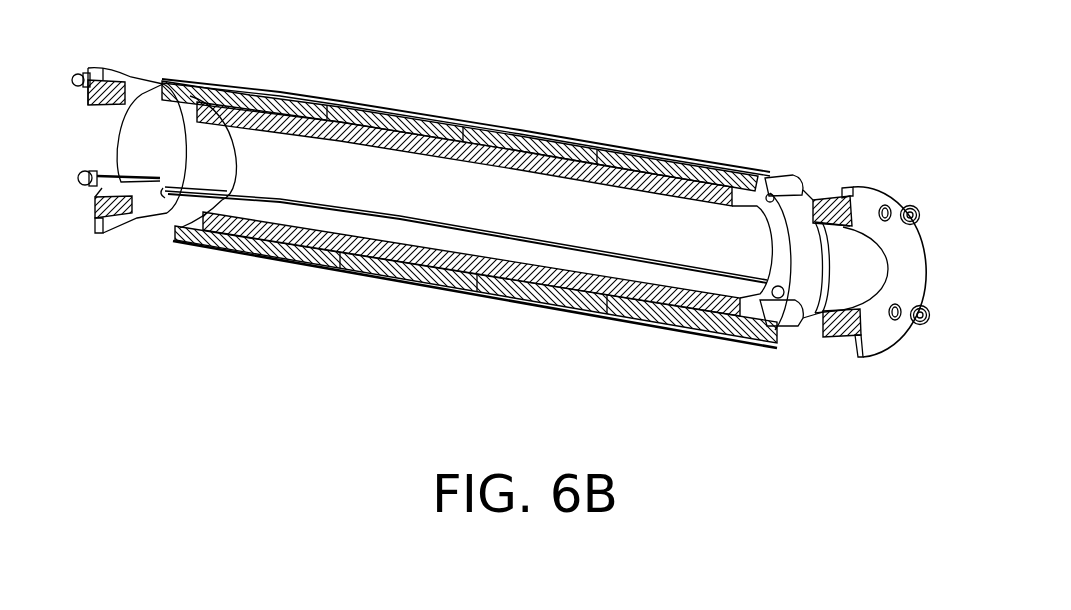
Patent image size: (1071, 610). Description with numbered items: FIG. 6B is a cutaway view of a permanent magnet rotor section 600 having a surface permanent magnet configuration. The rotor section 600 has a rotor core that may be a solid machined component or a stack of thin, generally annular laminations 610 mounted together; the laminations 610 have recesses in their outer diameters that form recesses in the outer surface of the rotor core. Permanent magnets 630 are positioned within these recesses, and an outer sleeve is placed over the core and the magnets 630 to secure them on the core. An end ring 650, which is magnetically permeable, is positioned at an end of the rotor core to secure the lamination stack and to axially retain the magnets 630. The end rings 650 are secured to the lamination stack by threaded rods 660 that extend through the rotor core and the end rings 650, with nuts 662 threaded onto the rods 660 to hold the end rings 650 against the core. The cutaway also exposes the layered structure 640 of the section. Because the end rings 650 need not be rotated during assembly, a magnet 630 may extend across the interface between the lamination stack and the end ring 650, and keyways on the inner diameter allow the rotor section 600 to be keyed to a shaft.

The rotor section 600 is at (505, 110).
The lamination 610 is at (766, 193).
The permanent magnet 630 is at (620, 152).
The insulation layers 640 is at (767, 338).
The end ring 650 is at (862, 192).
The threaded rod 660 is at (178, 84).
The nut 662 is at (922, 212).